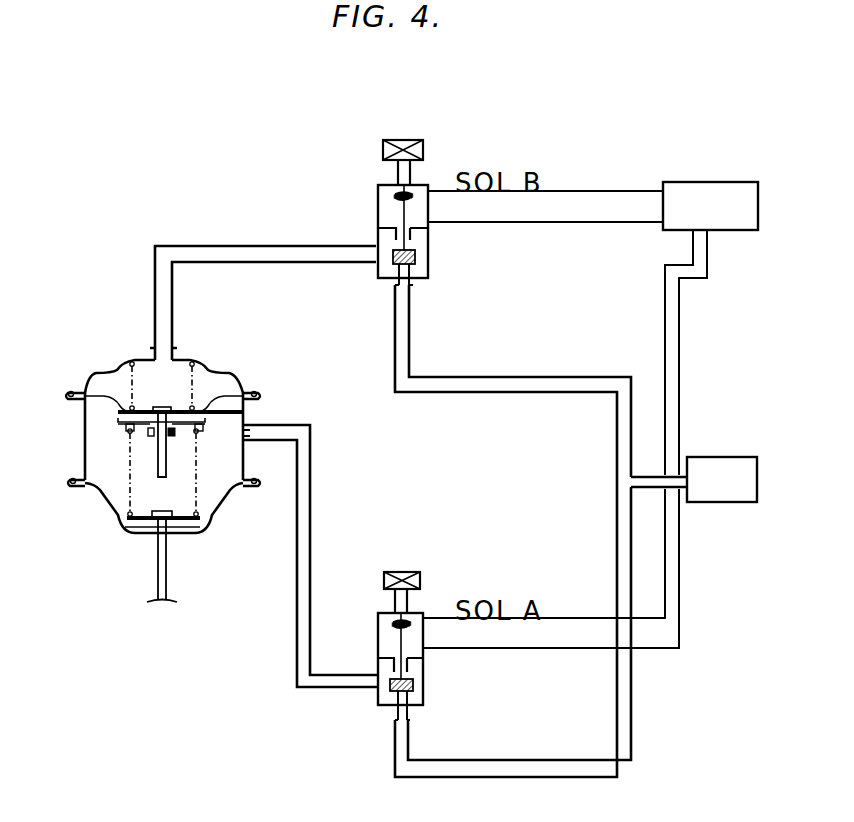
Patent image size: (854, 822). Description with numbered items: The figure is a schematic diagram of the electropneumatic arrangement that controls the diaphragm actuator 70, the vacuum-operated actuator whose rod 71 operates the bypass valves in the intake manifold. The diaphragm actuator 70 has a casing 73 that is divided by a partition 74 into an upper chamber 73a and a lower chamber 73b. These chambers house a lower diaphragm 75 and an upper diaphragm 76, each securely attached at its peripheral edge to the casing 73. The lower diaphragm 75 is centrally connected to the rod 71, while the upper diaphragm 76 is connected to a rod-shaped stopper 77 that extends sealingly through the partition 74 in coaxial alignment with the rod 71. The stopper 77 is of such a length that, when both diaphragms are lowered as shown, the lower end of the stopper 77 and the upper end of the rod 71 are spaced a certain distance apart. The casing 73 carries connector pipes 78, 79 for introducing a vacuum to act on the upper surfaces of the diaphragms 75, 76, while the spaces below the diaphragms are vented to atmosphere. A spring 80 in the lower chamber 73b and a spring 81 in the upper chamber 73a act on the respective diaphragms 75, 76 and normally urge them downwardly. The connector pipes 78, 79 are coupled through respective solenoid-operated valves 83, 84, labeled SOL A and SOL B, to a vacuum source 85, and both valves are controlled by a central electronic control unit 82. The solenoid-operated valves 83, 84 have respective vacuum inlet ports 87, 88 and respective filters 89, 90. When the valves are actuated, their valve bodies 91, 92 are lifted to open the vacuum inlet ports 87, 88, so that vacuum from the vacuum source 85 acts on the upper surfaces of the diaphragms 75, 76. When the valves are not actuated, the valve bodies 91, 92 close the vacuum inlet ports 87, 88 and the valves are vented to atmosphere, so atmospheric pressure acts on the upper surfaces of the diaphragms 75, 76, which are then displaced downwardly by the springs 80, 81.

The diaphragm actuator 70 is at (204, 466).
The rod 71 is at (166, 583).
The casing 73 is at (80, 390).
The upper chamber 73a is at (110, 380).
The lower chamber 73b is at (100, 478).
The partition 74 is at (98, 452).
The lower diaphragm 75 is at (102, 505).
The upper diaphragm 76 is at (86, 425).
The stopper 77 is at (150, 462).
The connector pipe 78 is at (253, 424).
The connector pipe 79 is at (172, 351).
The spring 80 is at (198, 460).
The spring 81 is at (193, 388).
The central electronic control unit 82 is at (708, 188).
The solenoid-operated valve 83 is at (408, 658).
The solenoid-operated valve 84 is at (423, 214).
The vacuum source 85 is at (727, 465).
The vacuum inlet port 87 is at (433, 714).
The vacuum inlet port 88 is at (412, 268).
The filter 89 is at (410, 572).
The filter 90 is at (406, 140).
The valve body 91 is at (416, 685).
The valve body 92 is at (395, 264).